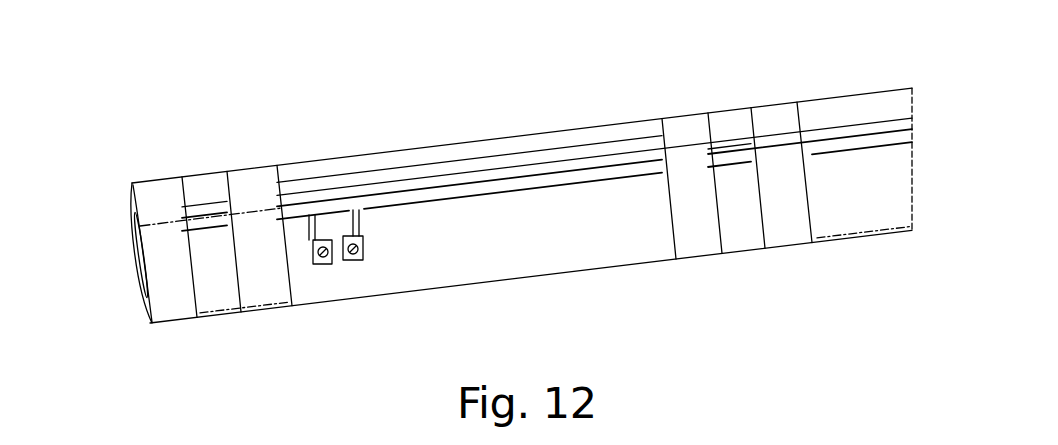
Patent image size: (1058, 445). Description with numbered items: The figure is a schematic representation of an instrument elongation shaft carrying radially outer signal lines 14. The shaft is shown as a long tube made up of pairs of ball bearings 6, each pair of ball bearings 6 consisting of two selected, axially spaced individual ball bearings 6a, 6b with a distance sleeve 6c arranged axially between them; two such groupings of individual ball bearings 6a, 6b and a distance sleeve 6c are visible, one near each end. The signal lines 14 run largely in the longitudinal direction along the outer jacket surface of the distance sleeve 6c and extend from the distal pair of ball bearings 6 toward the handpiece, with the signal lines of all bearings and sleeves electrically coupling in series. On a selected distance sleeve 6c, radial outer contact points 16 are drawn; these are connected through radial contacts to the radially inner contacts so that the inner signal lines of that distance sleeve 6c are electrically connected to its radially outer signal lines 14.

The pair of ball bearings 6 is at (272, 310).
The individual ball bearing 6a is at (162, 190).
The individual ball bearing 6b is at (245, 182).
The distance sleeve 6c is at (200, 190).
The signal lines 14 is at (317, 193).
The radial outer contacts 16 is at (320, 267).